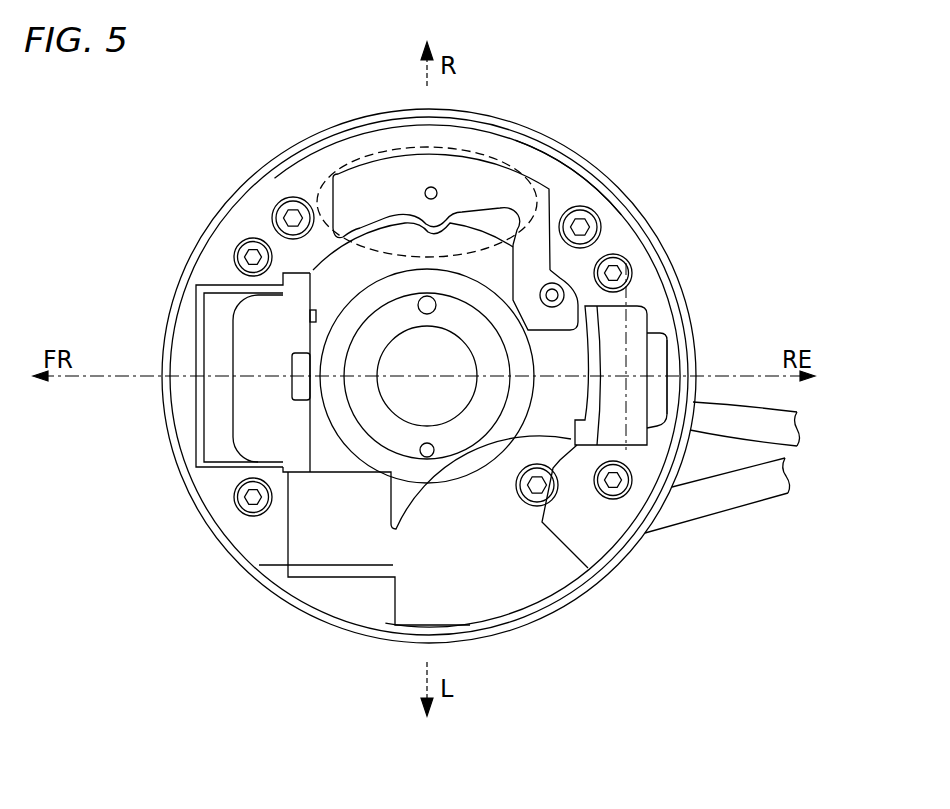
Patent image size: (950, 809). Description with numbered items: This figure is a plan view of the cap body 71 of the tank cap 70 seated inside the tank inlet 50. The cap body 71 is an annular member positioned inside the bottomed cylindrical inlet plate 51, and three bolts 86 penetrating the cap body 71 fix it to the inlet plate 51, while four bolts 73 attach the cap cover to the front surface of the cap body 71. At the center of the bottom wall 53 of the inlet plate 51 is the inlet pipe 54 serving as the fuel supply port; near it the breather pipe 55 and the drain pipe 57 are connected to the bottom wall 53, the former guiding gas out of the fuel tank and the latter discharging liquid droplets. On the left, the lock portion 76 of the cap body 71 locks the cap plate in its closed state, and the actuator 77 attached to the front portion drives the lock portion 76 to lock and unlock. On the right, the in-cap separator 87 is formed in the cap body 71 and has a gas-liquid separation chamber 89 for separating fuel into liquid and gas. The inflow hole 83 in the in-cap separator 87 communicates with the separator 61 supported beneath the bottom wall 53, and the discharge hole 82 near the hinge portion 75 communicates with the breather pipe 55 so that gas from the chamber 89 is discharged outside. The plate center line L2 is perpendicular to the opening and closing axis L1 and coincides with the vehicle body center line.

The tank inlet 50 is at (518, 655).
The inlet plate 51 is at (240, 183).
The bottom wall 53 is at (424, 513).
The inlet pipe 54 is at (429, 486).
The breather pipe 55 is at (755, 412).
The drain pipe 57 is at (720, 508).
The separator 61 is at (535, 190).
The tank cap 70 is at (320, 128).
The cap body 71 is at (566, 180).
The bolts 73 is at (235, 244).
The hinge portion 75 is at (661, 340).
The lock portion 76 is at (252, 330).
The actuator 77 is at (193, 433).
The discharge hole 82 is at (563, 291).
The inflow hole 83 is at (431, 187).
The bolts 86 is at (284, 198).
The in-cap separator 87 is at (372, 172).
The gas-liquid separation chamber 89 is at (487, 190).
The opening and closing axis L1 is at (643, 312).
The plate center line L2 is at (683, 353).